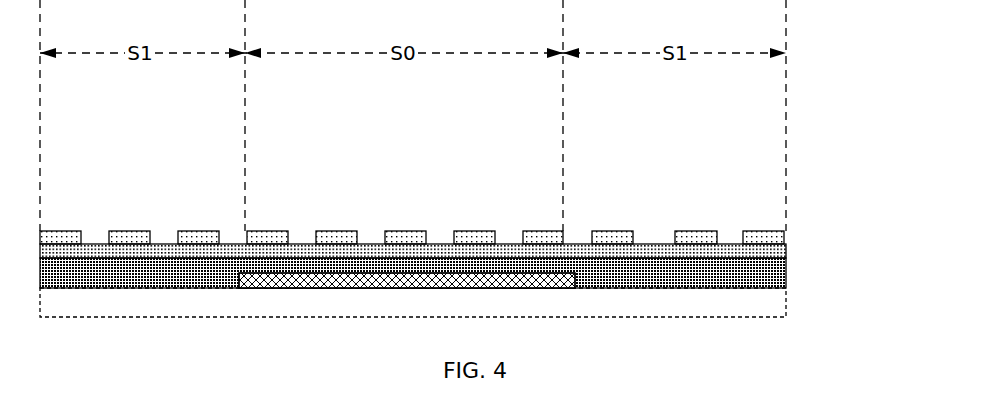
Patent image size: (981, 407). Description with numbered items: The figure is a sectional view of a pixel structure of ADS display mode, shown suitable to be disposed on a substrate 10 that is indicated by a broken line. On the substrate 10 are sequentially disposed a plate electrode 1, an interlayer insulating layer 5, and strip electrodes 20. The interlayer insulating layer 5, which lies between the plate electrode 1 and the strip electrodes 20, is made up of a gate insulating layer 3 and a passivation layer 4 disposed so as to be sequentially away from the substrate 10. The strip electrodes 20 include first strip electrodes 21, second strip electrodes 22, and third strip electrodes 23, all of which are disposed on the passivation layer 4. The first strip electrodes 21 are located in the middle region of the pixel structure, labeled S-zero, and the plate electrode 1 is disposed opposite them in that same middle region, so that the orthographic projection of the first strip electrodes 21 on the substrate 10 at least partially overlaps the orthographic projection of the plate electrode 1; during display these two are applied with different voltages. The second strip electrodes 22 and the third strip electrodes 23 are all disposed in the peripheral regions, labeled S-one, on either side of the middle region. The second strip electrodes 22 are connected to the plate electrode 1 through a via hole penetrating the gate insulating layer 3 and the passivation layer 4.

The plate electrode 1 is at (472, 278).
The gate insulating layer 3 is at (757, 265).
The passivation layer 4 is at (775, 250).
The interlayer insulating layer 5 is at (474, 295).
The substrate 10 is at (720, 303).
The strip electrodes 20 is at (657, 190).
The first strip electrodes 21 is at (267, 238).
The second strip electrodes 22 is at (128, 238).
The third strip electrodes 23 is at (57, 238).